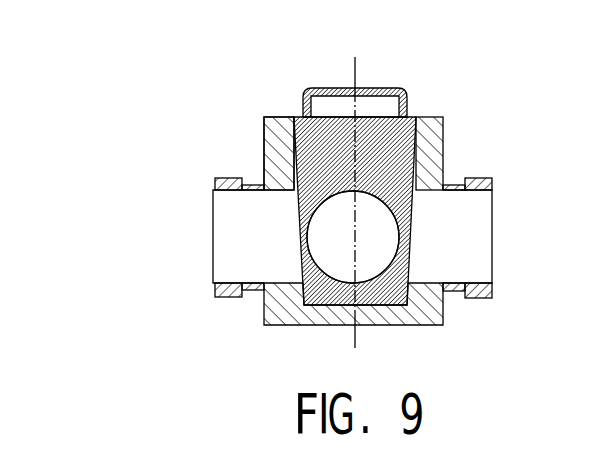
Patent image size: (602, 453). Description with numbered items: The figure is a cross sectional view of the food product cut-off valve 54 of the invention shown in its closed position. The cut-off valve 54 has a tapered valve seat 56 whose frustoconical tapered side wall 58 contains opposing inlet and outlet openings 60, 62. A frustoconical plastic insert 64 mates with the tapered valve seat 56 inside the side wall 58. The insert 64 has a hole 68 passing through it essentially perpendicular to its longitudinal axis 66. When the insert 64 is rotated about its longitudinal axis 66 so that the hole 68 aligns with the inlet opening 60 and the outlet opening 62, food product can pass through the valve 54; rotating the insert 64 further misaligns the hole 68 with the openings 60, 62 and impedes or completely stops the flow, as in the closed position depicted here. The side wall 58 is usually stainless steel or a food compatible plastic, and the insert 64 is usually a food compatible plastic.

The cut-off valve 54 is at (474, 140).
The tapered valve seat 56 is at (407, 290).
The frustoconical tapered side wall 58 is at (412, 210).
The inlet opening 60 is at (492, 213).
The outlet opening 62 is at (213, 218).
The frustoconical plastic insert 64 is at (310, 142).
The longitudinal axis 66 is at (355, 70).
The hole 68 is at (335, 253).